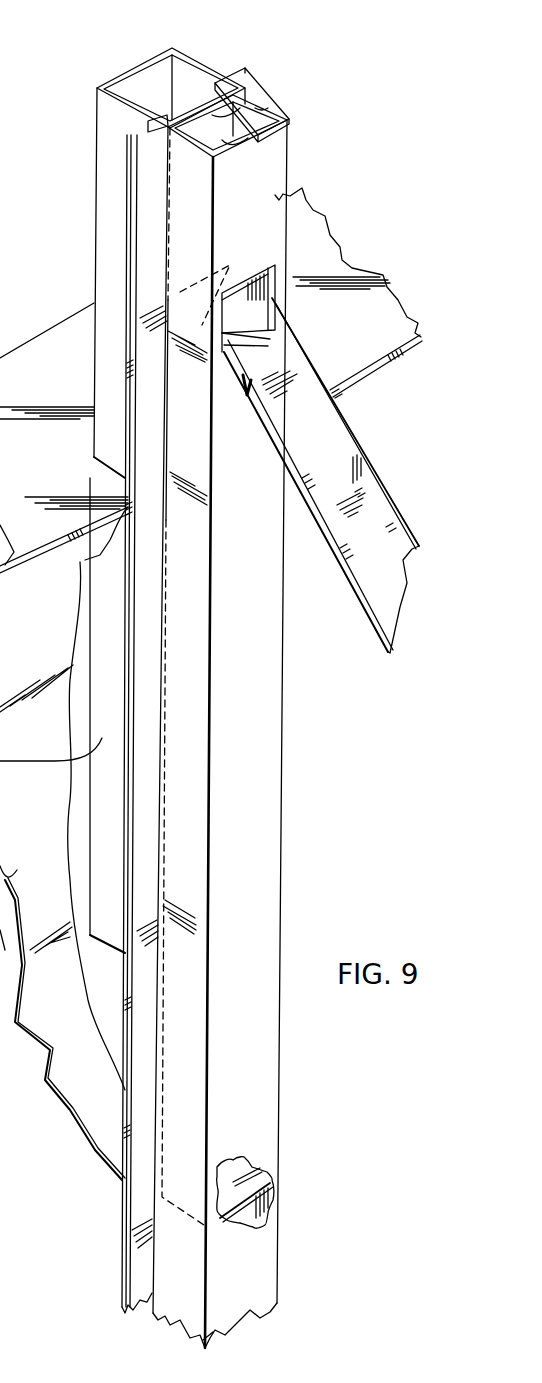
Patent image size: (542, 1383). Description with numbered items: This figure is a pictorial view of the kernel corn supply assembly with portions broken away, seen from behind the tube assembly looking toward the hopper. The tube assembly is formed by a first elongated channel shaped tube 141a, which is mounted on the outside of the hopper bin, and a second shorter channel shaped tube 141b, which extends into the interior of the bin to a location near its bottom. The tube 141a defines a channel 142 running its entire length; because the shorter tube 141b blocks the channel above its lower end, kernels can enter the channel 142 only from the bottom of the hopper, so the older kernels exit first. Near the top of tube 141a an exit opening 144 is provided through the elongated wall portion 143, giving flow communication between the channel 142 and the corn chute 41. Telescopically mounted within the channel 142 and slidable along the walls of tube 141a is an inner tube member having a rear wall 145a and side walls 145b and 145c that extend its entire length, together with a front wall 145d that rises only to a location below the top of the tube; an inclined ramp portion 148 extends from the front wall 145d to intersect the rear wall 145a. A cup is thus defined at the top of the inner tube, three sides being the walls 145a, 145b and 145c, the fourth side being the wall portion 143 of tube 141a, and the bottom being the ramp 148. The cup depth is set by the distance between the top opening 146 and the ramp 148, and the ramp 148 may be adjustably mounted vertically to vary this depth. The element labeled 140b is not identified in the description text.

The first elongated channel shaped tube 141a is at (272, 147).
The second shorter channel shaped tube 141b is at (150, 64).
The rear wall 145a is at (256, 85).
The side wall 145b is at (263, 110).
The side wall 145c is at (197, 128).
The front wall 145d is at (270, 1180).
The top opening 146 is at (230, 137).
The elongated wall portion 143 is at (291, 196).
The exit opening 144 is at (287, 307).
The inclined ramp portion 148 is at (292, 323).
The corn chute 41 is at (357, 548).
The side rail 140b is at (18, 372).
The channel 142 is at (244, 1218).